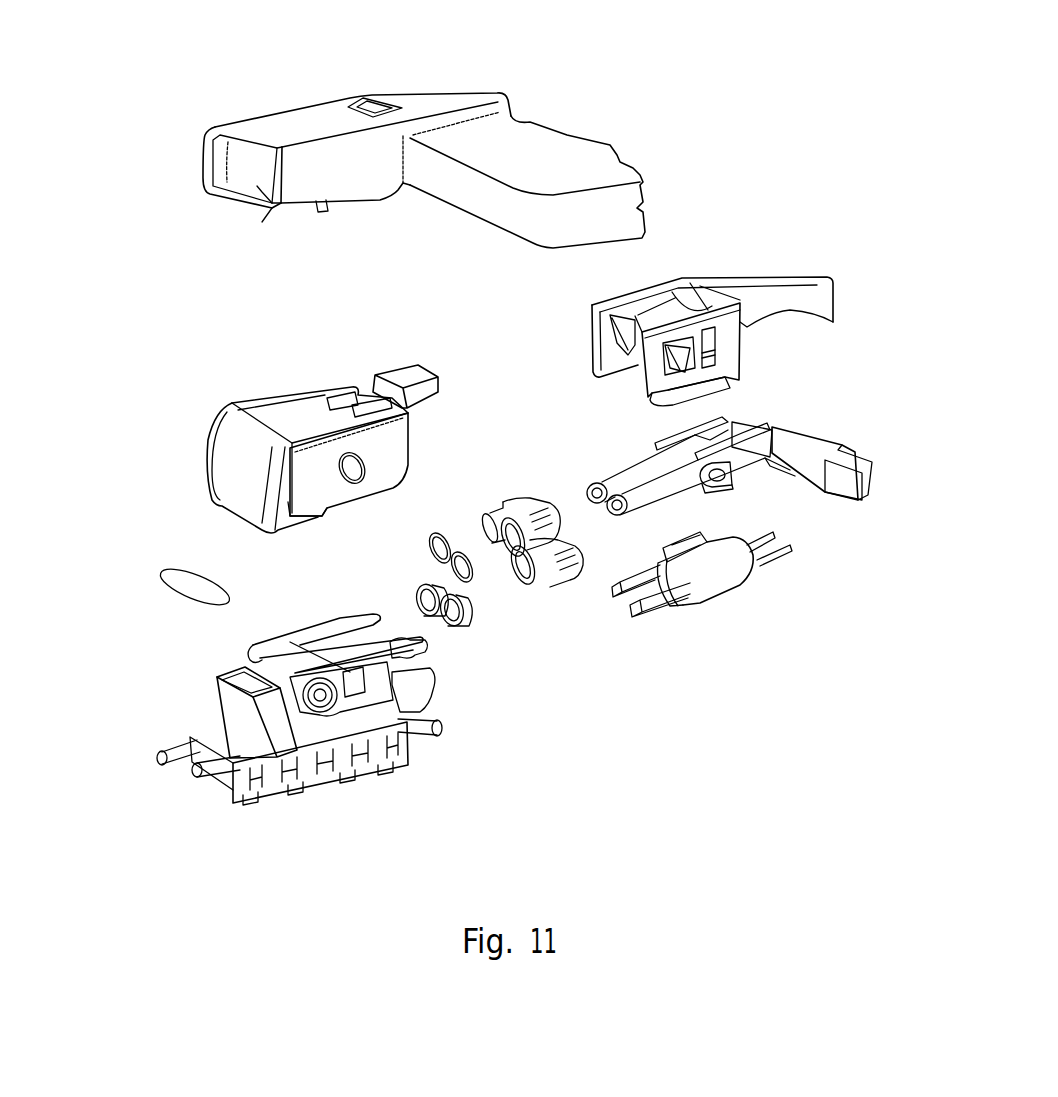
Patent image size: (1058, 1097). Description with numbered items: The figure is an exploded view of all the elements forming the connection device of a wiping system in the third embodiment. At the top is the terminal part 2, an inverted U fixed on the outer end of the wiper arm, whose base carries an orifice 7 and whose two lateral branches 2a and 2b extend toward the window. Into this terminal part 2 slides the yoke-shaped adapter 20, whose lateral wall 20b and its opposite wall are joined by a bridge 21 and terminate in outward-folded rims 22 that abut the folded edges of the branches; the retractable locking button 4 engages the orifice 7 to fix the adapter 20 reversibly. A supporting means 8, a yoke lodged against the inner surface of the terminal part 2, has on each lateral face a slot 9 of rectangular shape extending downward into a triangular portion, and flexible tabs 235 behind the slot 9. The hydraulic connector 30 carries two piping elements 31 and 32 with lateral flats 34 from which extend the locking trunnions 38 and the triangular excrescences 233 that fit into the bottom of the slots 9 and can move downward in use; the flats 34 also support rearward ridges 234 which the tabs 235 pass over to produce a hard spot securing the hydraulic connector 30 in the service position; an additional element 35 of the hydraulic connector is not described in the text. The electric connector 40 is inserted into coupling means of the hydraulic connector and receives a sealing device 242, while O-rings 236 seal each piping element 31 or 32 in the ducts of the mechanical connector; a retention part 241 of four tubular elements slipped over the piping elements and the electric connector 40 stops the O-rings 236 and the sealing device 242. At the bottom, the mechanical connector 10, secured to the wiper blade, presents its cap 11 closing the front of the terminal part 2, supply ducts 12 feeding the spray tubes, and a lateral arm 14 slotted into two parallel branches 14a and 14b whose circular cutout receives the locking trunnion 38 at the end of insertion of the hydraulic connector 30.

The terminal part 2 is at (377, 135).
The lateral branch 2a is at (207, 178).
The lateral branch 2b is at (262, 222).
The orifice 7 is at (373, 110).
The supporting means 8 is at (698, 292).
The slot 9 is at (617, 330).
The flexible tabs 235 is at (727, 343).
The adapter 20 is at (255, 454).
The bridge 21 is at (293, 417).
The cap 11 is at (237, 462).
The rim 22 is at (297, 527).
The lateral wall 20b is at (328, 490).
The retractable locking button 4 is at (413, 373).
The O-ring 236 is at (437, 537).
The sealing device 242 is at (465, 615).
The retention part 241 is at (563, 583).
The hydraulic connector 30 is at (760, 455).
The lateral flats 34 is at (687, 433).
The bar 35 is at (730, 423).
The ridges 234 is at (777, 423).
The excrescence 233 is at (723, 480).
The locking trunnion 38 is at (710, 490).
The piping element 31 is at (867, 457).
The piping element 32 is at (843, 493).
The electric connector 40 is at (733, 583).
The mechanical connector 10 is at (297, 745).
The supply ducts 12 is at (225, 787).
The arm 14 is at (413, 707).
The branch 14a is at (420, 647).
The branch 14b is at (427, 685).